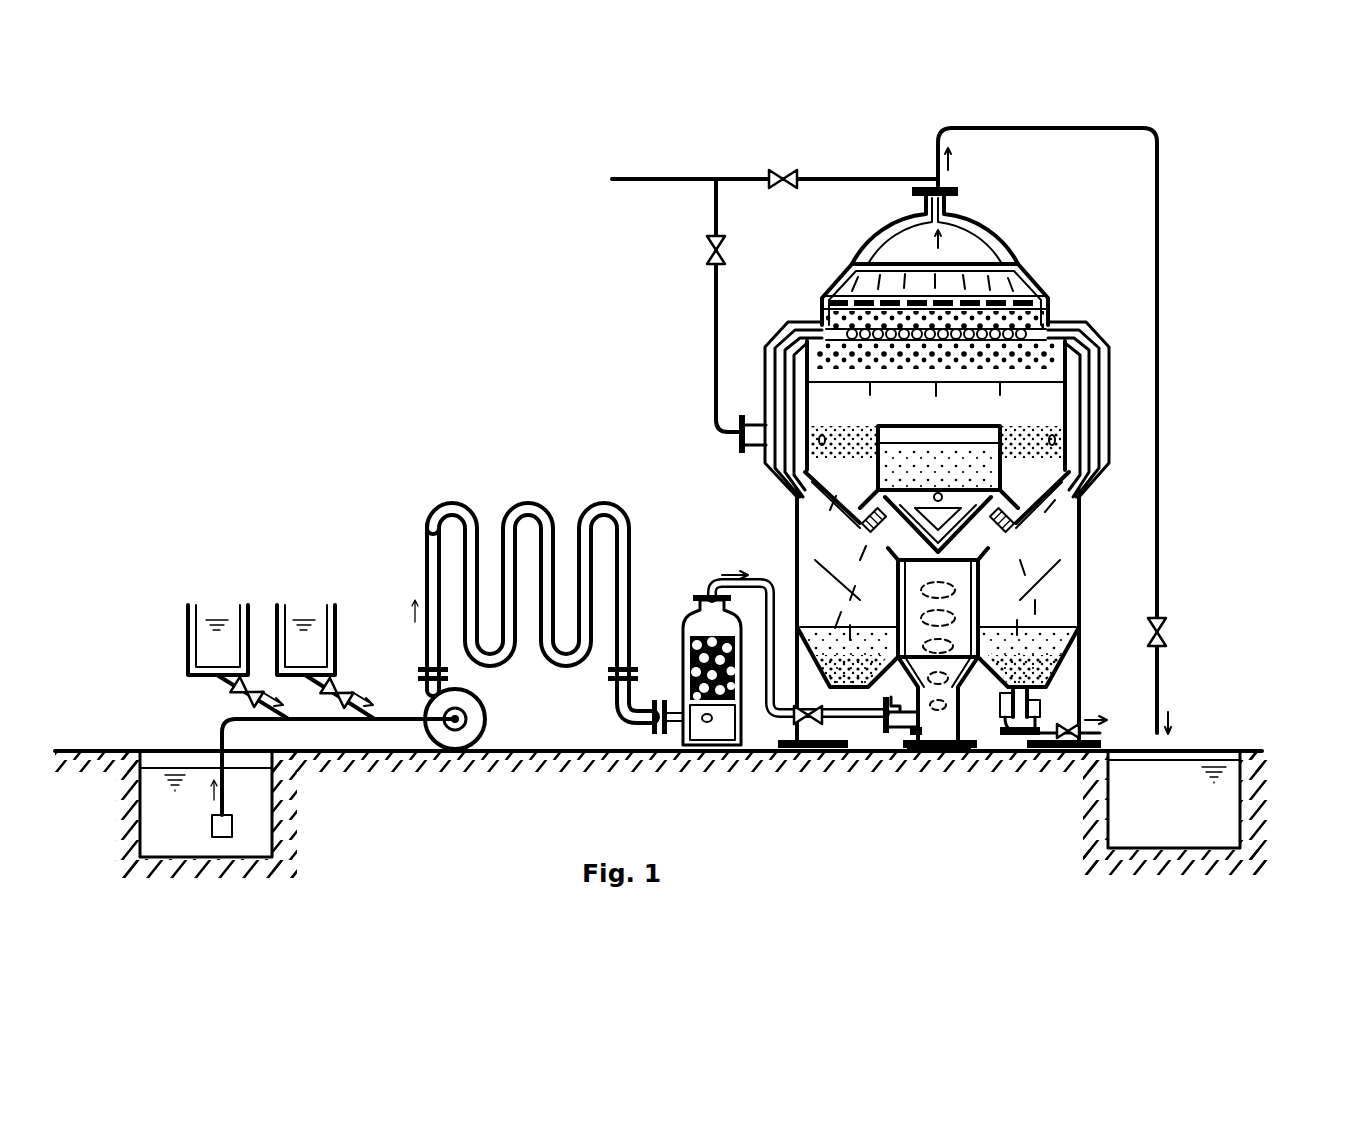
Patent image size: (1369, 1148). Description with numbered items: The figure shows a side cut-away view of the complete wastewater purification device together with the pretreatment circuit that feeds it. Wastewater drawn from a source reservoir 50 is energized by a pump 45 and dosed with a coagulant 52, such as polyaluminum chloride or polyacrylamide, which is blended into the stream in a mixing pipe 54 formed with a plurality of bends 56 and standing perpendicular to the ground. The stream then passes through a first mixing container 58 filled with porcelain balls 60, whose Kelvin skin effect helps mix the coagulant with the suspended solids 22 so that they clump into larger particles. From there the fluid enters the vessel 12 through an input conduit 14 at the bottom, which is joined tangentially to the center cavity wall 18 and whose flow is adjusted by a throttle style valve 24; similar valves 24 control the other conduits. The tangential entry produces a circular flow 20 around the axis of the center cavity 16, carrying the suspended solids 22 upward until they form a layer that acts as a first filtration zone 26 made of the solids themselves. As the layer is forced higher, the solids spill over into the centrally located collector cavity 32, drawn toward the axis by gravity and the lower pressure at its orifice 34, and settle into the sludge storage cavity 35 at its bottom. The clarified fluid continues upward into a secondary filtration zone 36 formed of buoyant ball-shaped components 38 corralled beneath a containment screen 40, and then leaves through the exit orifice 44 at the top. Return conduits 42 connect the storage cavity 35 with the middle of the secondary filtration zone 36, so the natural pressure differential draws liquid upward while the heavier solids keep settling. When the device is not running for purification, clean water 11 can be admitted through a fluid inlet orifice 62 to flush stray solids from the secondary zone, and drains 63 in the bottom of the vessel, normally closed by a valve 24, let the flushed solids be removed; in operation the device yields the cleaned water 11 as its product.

The water 11 is at (617, 179).
The vessel 12 is at (1082, 594).
The input conduit 14 is at (950, 700).
The center cavity 16 is at (950, 705).
The center cavity wall 18 is at (1083, 488).
The circular flow 20 is at (886, 700).
The suspended solids 22 is at (825, 600).
The throttle style valve 24 is at (778, 178).
The first filtration zone 26 is at (845, 442).
The collector cavity 32 is at (975, 465).
The orifice 34 is at (1000, 430).
The sludge storage cavity 35 is at (1052, 568).
The secondary filtration zone 36 is at (862, 305).
The ball-shaped components 38 is at (1020, 340).
The containment screen 40 is at (958, 333).
The return conduits 42 is at (1088, 405).
The exit orifice 44 is at (936, 176).
The pump 45 is at (484, 718).
The wastewater source reservoir 50 is at (190, 846).
The coagulant 52 is at (217, 622).
The mixing pipe 54 is at (426, 578).
The bends 56 is at (524, 597).
The first mixing container 58 is at (718, 740).
The porcelain balls 60 is at (766, 691).
The fluid inlet orifice 62 is at (740, 434).
The drains 63 is at (1040, 736).